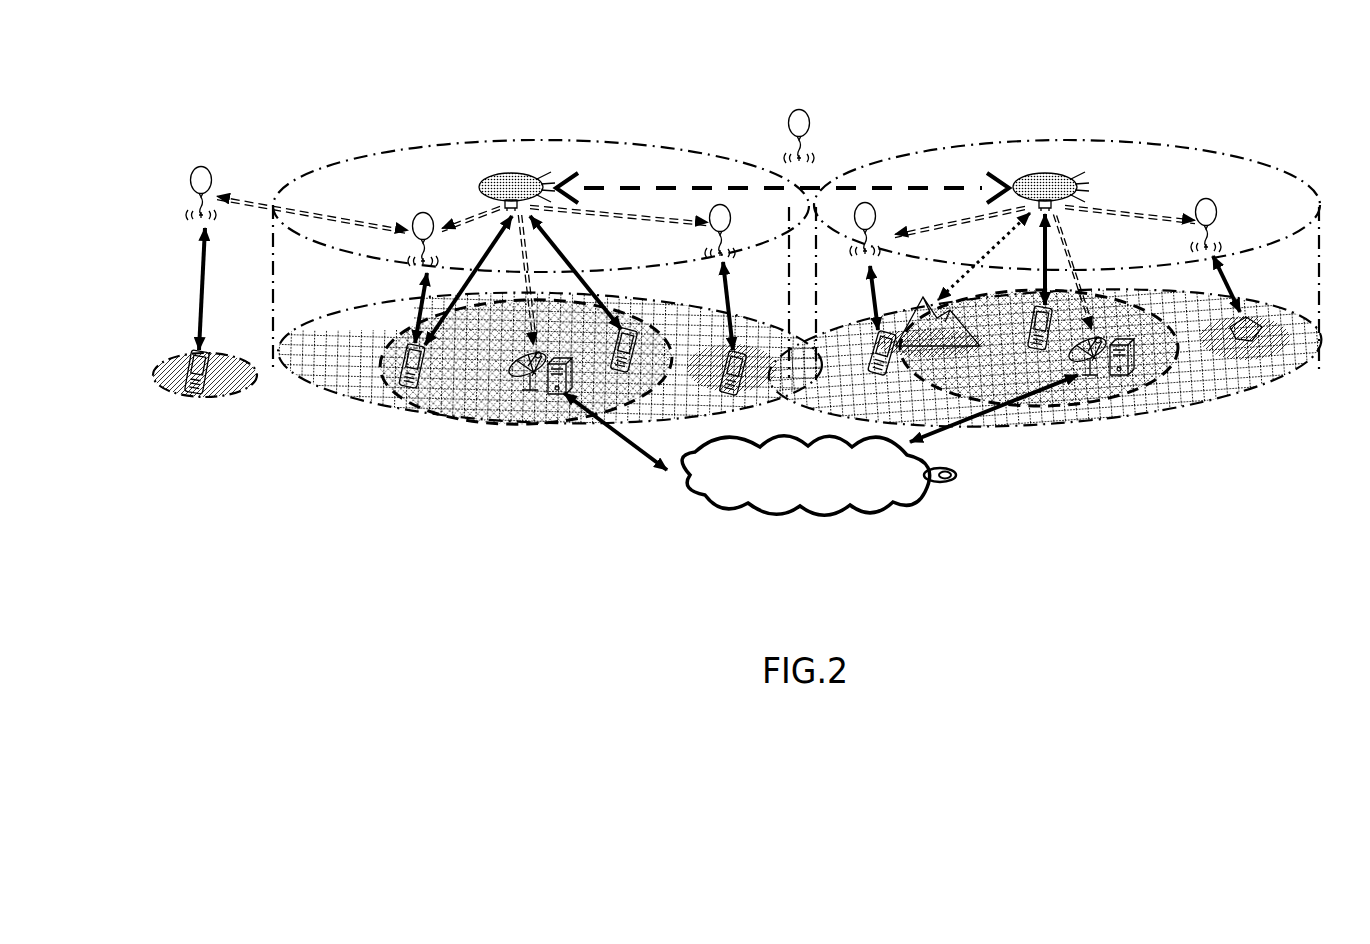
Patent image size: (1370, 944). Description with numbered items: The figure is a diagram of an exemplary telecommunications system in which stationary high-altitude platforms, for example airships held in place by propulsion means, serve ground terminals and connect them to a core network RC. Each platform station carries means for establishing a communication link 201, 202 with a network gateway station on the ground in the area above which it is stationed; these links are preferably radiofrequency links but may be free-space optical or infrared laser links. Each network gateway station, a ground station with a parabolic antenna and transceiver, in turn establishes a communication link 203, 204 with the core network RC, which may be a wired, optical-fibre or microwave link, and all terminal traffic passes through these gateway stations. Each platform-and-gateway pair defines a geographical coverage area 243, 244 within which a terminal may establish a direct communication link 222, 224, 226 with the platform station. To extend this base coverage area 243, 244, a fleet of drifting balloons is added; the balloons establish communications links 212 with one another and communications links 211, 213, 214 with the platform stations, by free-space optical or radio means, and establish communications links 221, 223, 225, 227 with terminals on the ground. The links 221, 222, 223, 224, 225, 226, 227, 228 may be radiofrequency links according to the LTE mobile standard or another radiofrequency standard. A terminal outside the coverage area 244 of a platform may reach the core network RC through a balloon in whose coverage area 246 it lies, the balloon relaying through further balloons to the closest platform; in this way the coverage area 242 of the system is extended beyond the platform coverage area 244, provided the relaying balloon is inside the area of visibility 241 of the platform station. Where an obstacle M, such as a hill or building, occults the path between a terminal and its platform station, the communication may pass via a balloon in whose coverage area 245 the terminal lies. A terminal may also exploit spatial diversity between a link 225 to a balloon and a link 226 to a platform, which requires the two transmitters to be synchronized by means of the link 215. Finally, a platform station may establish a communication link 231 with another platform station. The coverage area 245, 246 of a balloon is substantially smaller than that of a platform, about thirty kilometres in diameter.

The communication link 201 is at (524, 262).
The communication link 202 is at (1072, 252).
The communication link 203 is at (624, 450).
The communication link 204 is at (975, 431).
The communications link 211 is at (603, 226).
The communications link 212 is at (378, 215).
The communications link 213 is at (1132, 222).
The communications link 214 is at (975, 223).
The synchronization link 215 is at (494, 219).
The communications link 221 is at (206, 296).
The communication link 222 is at (579, 276).
The communications link 223 is at (733, 301).
The communication link 224 is at (1045, 274).
The communications link 225 is at (420, 282).
The communication link 226 is at (448, 296).
The communications link 227 is at (872, 296).
The communication link 228 is at (996, 248).
The inter-platform communication link 231 is at (630, 184).
The area of visibility 241 is at (1119, 139).
The extended coverage area 242 is at (1209, 406).
The geographical coverage area 243 is at (1146, 395).
The geographical coverage area 244 is at (484, 426).
The balloon coverage area 245 is at (442, 422).
The balloon coverage area 246 is at (226, 397).
The obstacle M is at (944, 334).
The core network RC is at (848, 508).